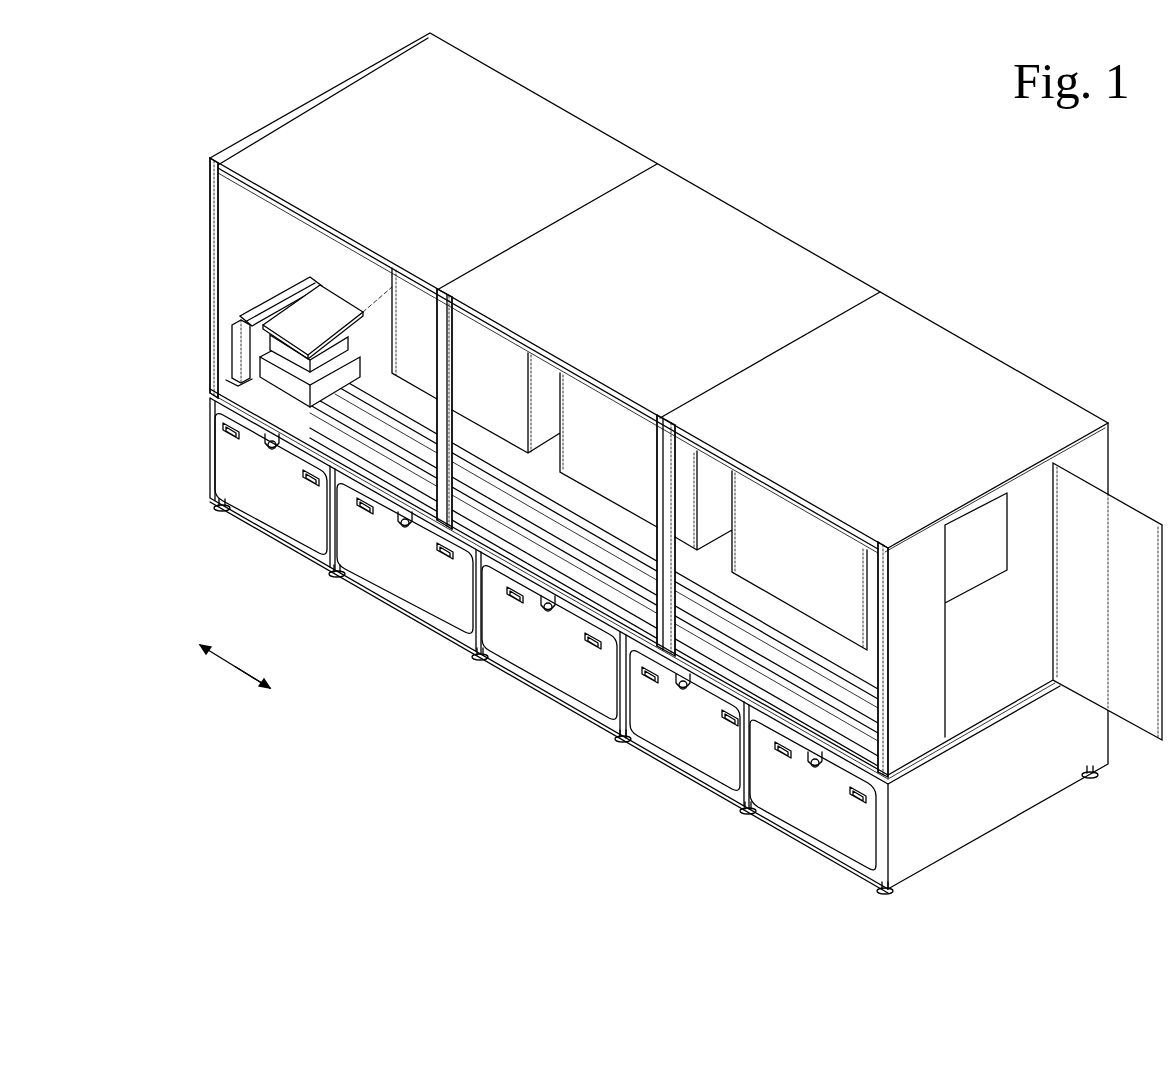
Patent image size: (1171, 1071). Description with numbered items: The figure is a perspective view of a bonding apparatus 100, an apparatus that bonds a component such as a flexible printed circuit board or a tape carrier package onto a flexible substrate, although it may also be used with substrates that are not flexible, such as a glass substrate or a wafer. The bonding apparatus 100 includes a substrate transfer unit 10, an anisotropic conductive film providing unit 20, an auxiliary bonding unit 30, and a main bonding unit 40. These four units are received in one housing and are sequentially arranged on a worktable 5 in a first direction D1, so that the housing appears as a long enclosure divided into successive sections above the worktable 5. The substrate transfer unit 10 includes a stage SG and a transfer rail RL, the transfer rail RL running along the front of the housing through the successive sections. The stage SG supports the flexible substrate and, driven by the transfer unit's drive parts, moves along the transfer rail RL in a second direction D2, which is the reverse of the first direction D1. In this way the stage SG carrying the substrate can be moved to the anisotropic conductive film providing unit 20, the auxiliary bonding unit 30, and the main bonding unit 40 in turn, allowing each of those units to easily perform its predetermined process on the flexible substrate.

The bonding apparatus 100 is at (1007, 334).
The worktable 5 is at (792, 697).
The substrate transfer unit 10 is at (262, 348).
The anisotropic conductive film (ACF) providing unit 20 is at (417, 391).
The auxiliary bonding unit 30 is at (622, 508).
The main bonding unit 40 is at (797, 612).
The transfer rail RL is at (515, 512).
The stage SG is at (302, 308).
The first direction D1 is at (220, 654).
The second direction D2 is at (273, 687).